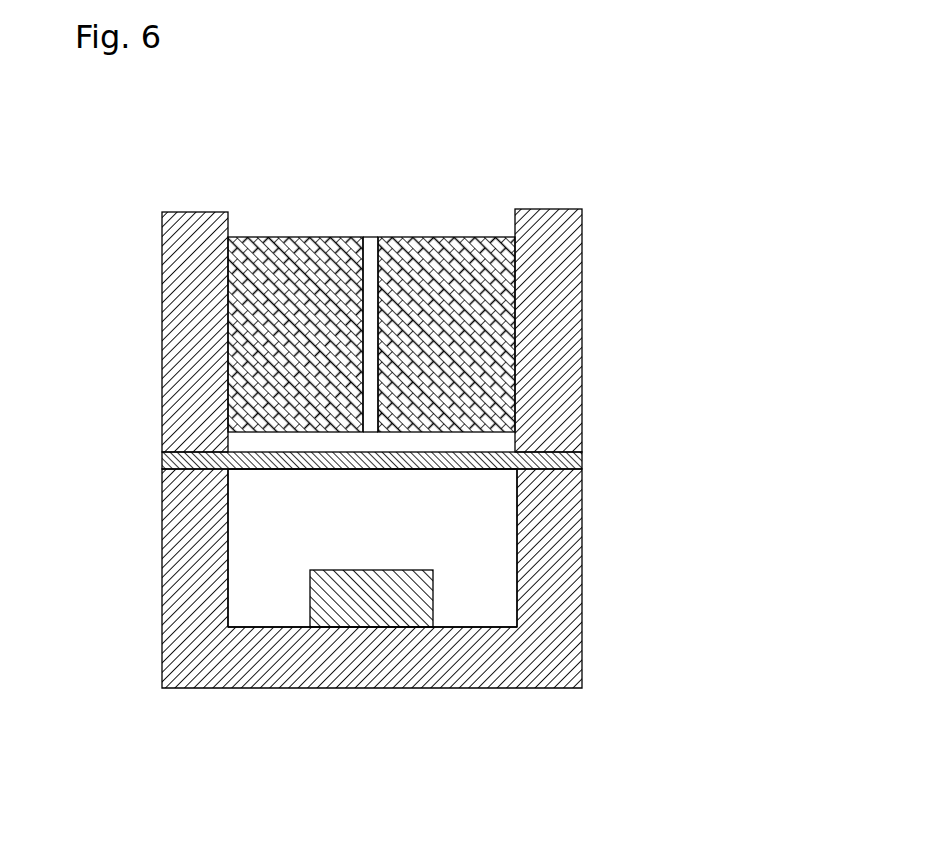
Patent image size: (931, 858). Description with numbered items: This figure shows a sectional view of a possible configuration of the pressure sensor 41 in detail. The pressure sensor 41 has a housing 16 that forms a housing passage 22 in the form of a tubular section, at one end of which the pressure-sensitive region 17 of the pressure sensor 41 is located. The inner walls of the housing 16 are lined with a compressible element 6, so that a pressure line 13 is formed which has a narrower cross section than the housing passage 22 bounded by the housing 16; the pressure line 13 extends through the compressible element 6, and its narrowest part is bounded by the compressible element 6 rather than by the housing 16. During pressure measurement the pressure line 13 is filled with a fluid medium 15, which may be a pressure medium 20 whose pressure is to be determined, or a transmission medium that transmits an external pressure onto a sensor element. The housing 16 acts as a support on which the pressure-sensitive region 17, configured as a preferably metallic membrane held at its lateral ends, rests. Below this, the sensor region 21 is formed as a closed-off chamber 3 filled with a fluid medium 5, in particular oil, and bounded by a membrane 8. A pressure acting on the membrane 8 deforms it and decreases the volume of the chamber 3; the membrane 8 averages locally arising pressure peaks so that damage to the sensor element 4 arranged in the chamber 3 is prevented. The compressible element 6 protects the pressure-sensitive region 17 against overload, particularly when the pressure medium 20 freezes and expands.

The chamber 3 is at (477, 595).
The sensor element 4 is at (368, 607).
The fluid medium 5 is at (482, 533).
The compressible element 6 is at (243, 398).
The membrane 8 is at (580, 460).
The pressure line 13 is at (370, 247).
The fluid medium 15 is at (368, 373).
The housing 16 is at (568, 260).
The pressure-sensitive region 17 is at (322, 471).
The pressure medium 20 is at (372, 283).
The sensor region 21 is at (349, 619).
The housing passage 22 is at (488, 300).
The pressure sensor 41 is at (390, 296).